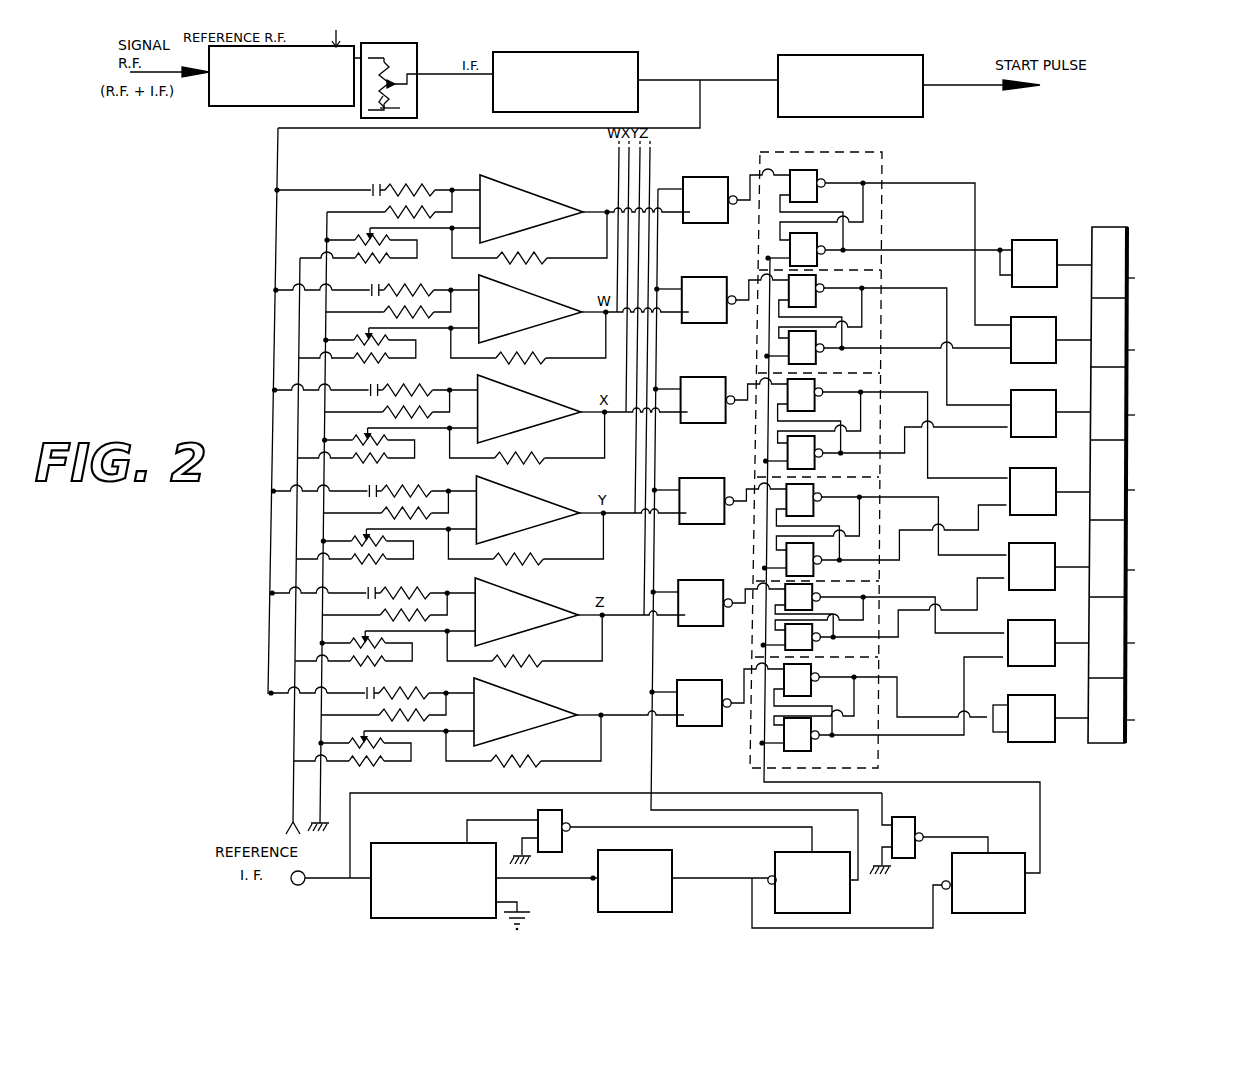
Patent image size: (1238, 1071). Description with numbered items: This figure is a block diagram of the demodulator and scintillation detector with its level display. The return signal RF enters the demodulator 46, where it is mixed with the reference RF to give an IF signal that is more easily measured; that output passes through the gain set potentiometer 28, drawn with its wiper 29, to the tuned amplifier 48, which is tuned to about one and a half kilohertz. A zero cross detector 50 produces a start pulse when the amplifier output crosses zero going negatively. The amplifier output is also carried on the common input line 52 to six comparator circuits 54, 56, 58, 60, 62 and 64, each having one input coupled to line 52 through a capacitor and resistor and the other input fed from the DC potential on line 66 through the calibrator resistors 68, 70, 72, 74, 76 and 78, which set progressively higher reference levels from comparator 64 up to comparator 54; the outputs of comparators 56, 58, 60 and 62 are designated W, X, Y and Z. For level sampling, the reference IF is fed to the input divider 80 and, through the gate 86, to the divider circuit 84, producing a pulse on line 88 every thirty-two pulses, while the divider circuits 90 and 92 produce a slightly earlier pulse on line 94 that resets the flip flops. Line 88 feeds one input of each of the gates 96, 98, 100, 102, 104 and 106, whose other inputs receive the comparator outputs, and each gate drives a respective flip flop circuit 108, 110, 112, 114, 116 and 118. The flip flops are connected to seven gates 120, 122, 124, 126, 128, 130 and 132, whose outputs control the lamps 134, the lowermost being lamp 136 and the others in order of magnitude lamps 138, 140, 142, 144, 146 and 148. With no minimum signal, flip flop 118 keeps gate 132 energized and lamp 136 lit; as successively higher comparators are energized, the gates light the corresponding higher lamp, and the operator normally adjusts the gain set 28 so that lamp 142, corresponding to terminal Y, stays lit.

The gain set potentiometer 28 is at (422, 67).
The potentiometer wiper 29 is at (383, 96).
The demodulator 46 is at (242, 106).
The tuned amplifier 48 is at (643, 67).
The zero cross detector 50 is at (923, 71).
The input line 52 is at (272, 264).
The comparator circuit 54 is at (545, 202).
The comparator circuit 56 is at (544, 307).
The comparator circuit 58 is at (543, 407).
The comparator circuit 60 is at (541, 508).
The comparator circuit 62 is at (540, 607).
The comparator circuit 64 is at (539, 707).
The DC potential line 66 is at (288, 808).
The calibrator resistor 68 is at (358, 239).
The calibrator resistor 70 is at (357, 339).
The calibrator resistor 72 is at (356, 439).
The calibrator resistor 74 is at (354, 540).
The calibrator resistor 76 is at (353, 642).
The calibrator resistor 78 is at (352, 742).
The input divider 80 is at (371, 920).
The divider circuit 84 is at (850, 892).
The gate 86 is at (564, 820).
The line 88 is at (652, 784).
The divider circuit 90 is at (674, 814).
The divider circuit 92 is at (1025, 888).
The line 94 is at (998, 784).
The gate 96 is at (693, 177).
The gate 98 is at (688, 282).
The gate 100 is at (718, 377).
The gate 102 is at (709, 478).
The gate 104 is at (706, 580).
The gate 106 is at (704, 680).
The flip flop circuit 108 is at (882, 172).
The flip flop circuit 110 is at (880, 344).
The flip flop circuit 112 is at (880, 432).
The flip flop circuit 114 is at (880, 540).
The flip flop circuit 116 is at (884, 600).
The flip flop circuit 118 is at (880, 706).
The gate 120 is at (1018, 240).
The gate 122 is at (1024, 318).
The gate 124 is at (1009, 390).
The gate 126 is at (1012, 467).
The gate 128 is at (1032, 548).
The gate 130 is at (1030, 624).
The gate 132 is at (1018, 700).
The lamps 134 is at (1127, 238).
The lamp 136 is at (1135, 720).
The lamp 138 is at (1135, 643).
The lamp 140 is at (1135, 570).
The lamp 142 is at (1135, 490).
The lamp 144 is at (1135, 415).
The lamp 146 is at (1135, 350).
The lamp 148 is at (1135, 278).